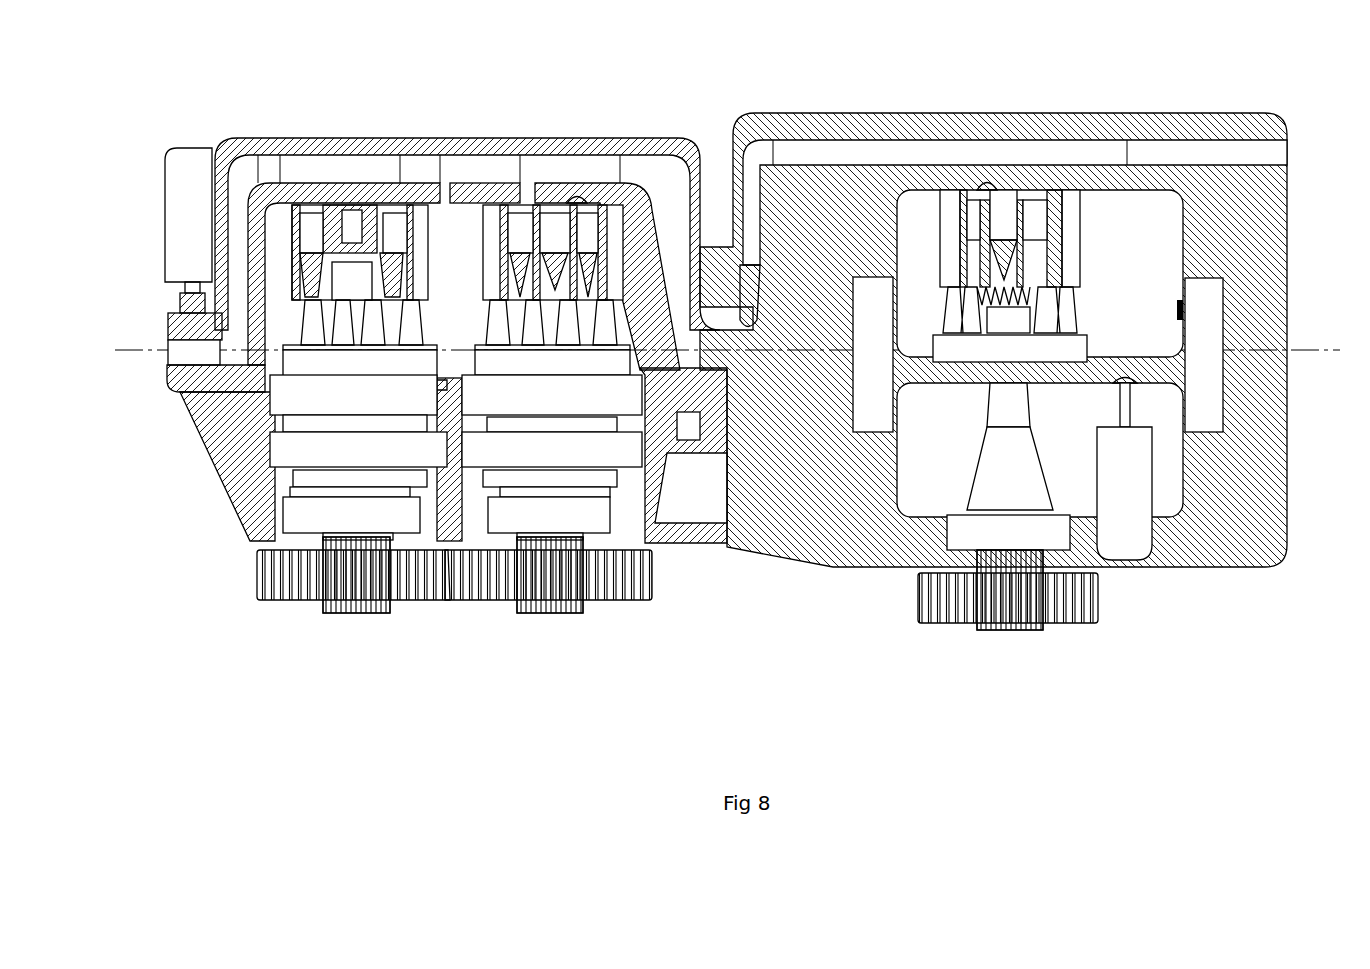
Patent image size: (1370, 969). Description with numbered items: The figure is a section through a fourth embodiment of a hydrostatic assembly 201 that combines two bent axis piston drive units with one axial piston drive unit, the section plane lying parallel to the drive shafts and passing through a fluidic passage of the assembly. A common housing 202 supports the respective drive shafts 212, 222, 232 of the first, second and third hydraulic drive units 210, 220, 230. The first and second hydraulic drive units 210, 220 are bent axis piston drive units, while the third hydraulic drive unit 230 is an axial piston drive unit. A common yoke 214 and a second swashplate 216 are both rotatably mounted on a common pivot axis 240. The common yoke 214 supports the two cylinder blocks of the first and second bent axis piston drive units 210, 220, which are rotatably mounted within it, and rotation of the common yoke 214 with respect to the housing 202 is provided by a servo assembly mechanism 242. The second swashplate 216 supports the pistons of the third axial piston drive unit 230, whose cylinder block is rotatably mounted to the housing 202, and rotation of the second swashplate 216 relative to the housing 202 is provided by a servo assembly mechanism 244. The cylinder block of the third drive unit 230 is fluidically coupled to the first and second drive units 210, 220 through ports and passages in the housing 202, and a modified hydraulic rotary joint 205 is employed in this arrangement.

The hydrostatic assembly 201 is at (723, 416).
The common housing 202 is at (1268, 228).
The modified hydraulic rotary joint 205 is at (762, 400).
The first hydraulic drive unit 210 is at (481, 276).
The drive shaft 212 is at (552, 612).
The common yoke 214 is at (362, 150).
The second swashplate 216 is at (1163, 353).
The second hydraulic drive unit 220 is at (432, 280).
The drive shaft 222 is at (355, 608).
The third hydraulic drive unit 230 is at (1083, 244).
The drive shaft 232 is at (1003, 628).
The common pivot axis 240 is at (165, 352).
The servo assembly mechanism 242 is at (178, 202).
The servo assembly mechanism 244 is at (1197, 570).